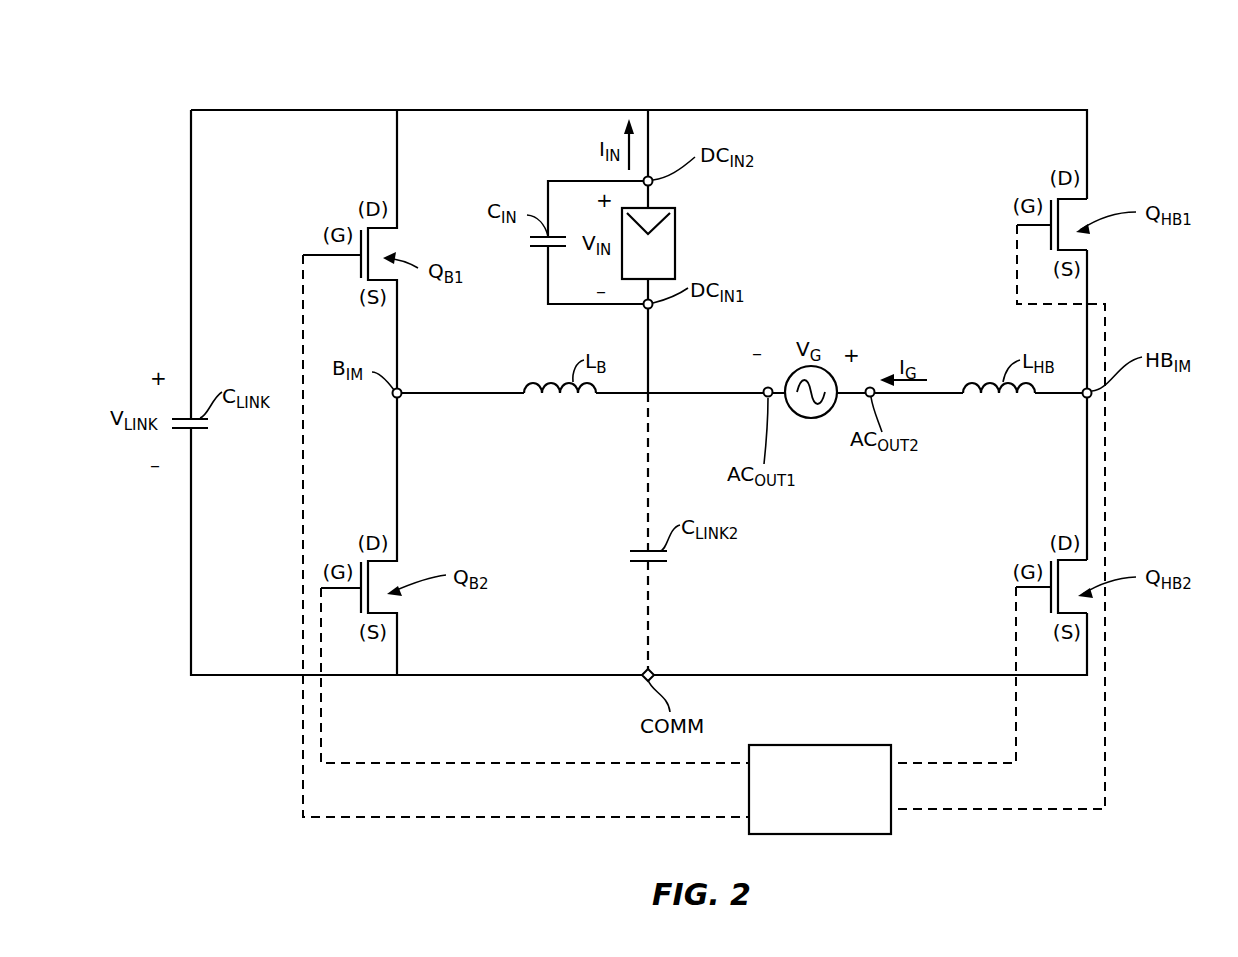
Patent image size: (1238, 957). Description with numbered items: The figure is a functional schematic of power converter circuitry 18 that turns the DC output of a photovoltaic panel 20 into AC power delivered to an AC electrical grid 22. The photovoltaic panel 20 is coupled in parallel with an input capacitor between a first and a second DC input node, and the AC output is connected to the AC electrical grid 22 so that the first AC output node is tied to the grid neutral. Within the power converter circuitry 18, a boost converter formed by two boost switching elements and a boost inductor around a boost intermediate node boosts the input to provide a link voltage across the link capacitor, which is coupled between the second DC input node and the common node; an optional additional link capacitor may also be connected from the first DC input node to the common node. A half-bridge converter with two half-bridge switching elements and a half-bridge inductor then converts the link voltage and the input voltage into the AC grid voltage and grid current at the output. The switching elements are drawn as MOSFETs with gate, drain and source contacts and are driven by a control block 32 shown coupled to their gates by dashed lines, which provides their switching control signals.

The power converter circuitry 18 is at (944, 60).
The photovoltaic panel 20 is at (676, 242).
The AC electrical grid 22 is at (813, 417).
The control unit 32 is at (807, 812).